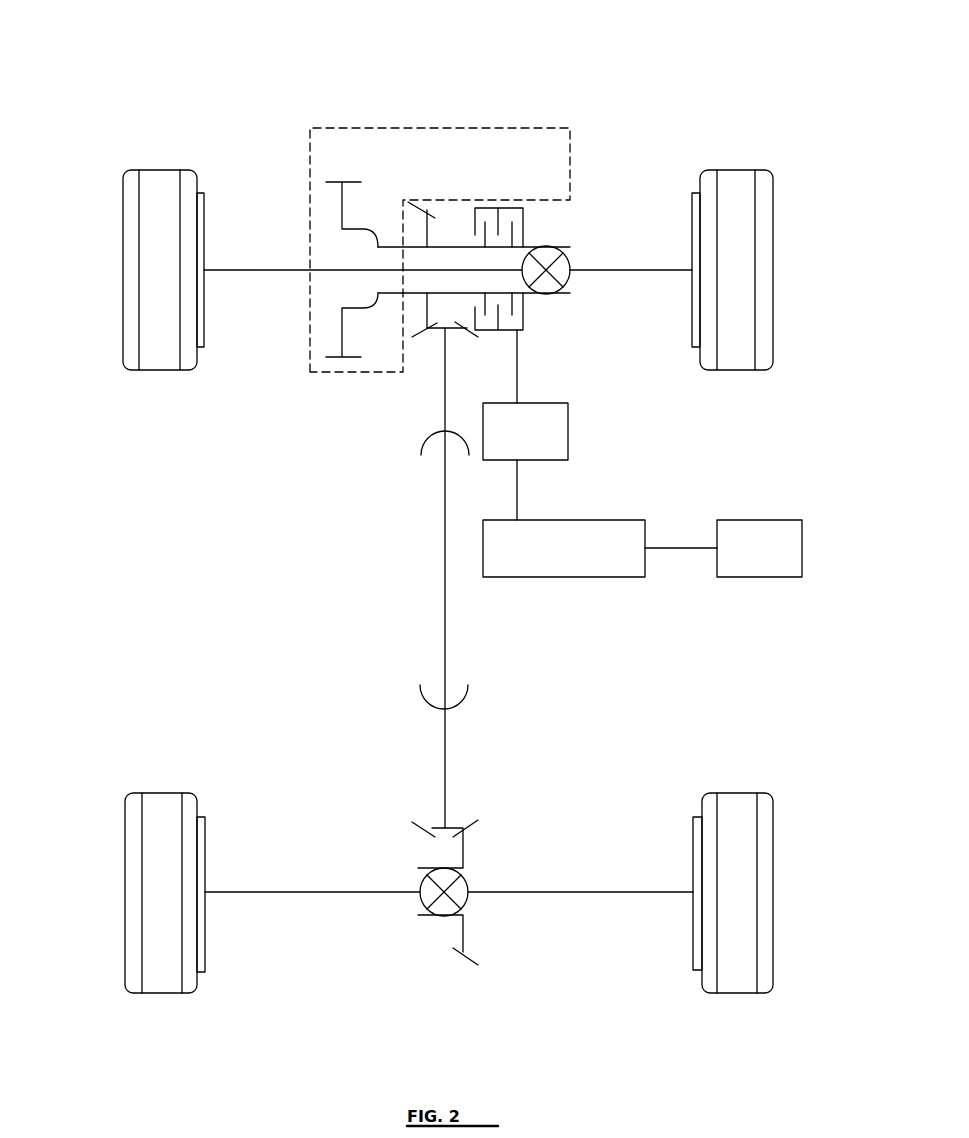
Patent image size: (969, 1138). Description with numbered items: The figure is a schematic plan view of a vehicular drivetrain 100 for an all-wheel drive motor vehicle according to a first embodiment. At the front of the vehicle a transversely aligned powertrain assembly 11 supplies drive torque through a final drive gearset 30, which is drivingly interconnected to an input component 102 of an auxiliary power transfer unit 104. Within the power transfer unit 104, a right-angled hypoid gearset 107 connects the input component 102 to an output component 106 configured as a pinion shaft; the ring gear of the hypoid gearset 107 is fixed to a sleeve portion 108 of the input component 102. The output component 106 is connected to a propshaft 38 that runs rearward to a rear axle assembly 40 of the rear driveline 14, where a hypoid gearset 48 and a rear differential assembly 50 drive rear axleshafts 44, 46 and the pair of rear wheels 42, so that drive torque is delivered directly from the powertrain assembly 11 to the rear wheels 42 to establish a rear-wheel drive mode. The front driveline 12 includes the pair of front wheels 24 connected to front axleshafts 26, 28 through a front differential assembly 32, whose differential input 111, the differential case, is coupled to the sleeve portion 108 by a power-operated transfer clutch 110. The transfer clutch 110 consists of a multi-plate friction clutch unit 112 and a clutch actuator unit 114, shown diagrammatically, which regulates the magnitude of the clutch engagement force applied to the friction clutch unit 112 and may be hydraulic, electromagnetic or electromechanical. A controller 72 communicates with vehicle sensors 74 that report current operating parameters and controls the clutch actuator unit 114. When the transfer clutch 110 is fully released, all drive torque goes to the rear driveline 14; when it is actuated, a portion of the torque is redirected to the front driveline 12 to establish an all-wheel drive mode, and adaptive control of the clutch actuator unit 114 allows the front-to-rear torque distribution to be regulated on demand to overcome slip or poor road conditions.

The vehicular drivetrain 100 is at (700, 73).
The powertrain assembly 11 is at (368, 143).
The front driveline 12 is at (298, 328).
The rear driveline 14 is at (598, 743).
The front wheels 24 is at (123, 272).
The front axleshaft 26 is at (313, 268).
The front axleshaft 28 is at (593, 268).
The final drive gearset 30 is at (330, 360).
The front differential assembly 32 is at (555, 297).
The propshaft 38 is at (445, 623).
The rear axle assembly 40 is at (347, 827).
The rear wheels 42 is at (125, 895).
The rear axleshaft 44 is at (343, 893).
The rear axleshaft 46 is at (550, 893).
The hypoid gearset 48 is at (490, 830).
The rear differential assembly 50 is at (432, 920).
The controller 72 is at (600, 518).
The vehicle sensors 74 is at (759, 548).
The input component 102 is at (377, 310).
The auxiliary power transfer unit 104 is at (543, 223).
The output component 106 is at (438, 358).
The hypoid gearset 107 is at (433, 207).
The sleeve portion 108 is at (417, 247).
The transfer clutch 110 is at (585, 385).
The differential input 111 is at (562, 293).
The multi-plate friction clutch unit 112 is at (512, 217).
The clutch actuator unit 114 is at (525, 395).